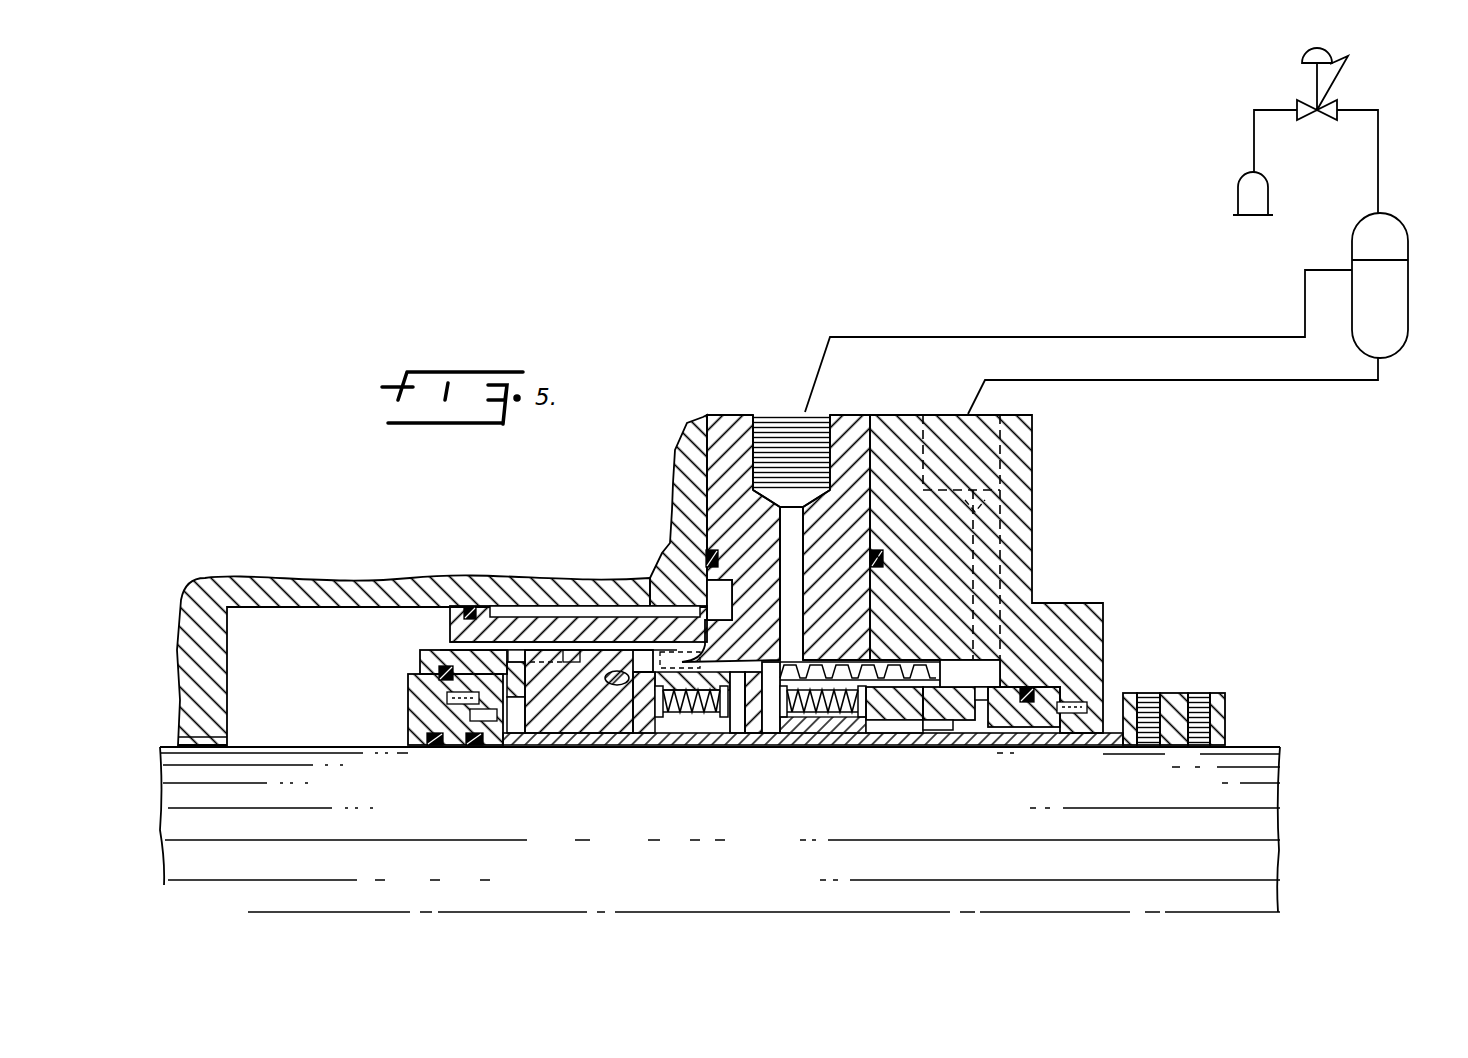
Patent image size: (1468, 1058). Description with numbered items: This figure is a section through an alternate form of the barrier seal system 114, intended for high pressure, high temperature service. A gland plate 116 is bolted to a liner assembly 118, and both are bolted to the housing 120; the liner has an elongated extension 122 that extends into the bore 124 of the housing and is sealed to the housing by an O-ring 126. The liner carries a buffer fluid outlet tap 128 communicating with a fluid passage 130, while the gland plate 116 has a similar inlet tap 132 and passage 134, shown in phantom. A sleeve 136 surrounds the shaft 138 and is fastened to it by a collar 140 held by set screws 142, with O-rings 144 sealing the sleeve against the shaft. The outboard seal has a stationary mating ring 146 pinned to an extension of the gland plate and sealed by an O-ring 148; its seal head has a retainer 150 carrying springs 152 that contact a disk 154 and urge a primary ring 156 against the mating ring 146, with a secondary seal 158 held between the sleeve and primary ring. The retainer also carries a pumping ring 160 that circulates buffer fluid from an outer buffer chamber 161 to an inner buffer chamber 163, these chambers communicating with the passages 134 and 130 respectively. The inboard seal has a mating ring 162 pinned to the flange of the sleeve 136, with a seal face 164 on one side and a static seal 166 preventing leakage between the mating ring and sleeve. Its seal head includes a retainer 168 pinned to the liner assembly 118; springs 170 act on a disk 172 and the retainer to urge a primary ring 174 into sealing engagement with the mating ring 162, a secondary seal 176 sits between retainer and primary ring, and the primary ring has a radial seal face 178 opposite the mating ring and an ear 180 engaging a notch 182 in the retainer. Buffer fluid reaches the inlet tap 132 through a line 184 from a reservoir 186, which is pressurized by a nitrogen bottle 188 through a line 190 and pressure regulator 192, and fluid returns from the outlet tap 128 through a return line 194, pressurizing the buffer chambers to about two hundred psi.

The barrier seal system 114 is at (1043, 533).
The gland plate 116 is at (905, 417).
The liner assembly 118 is at (733, 414).
The housing 120 is at (697, 437).
The elongated extension 122 is at (625, 632).
The bore 124 is at (278, 610).
The O-ring 126 is at (470, 608).
The buffer fluid outlet tap 128 is at (818, 420).
The fluid passage 130 is at (790, 522).
The inlet tap 132 is at (1003, 416).
The passage 134 is at (995, 583).
The sleeve 136 is at (1148, 748).
The shaft 138 is at (1286, 786).
The collar 140 is at (1227, 713).
The set screws 142 is at (1203, 693).
The O-rings 144 is at (447, 746).
The stationary mating ring 146 is at (1048, 740).
The O-ring 148 is at (1030, 690).
The retainer 150 is at (785, 745).
The springs 152 is at (808, 735).
The disk 154 is at (843, 745).
The primary ring 156 is at (972, 740).
The secondary seal 158 is at (872, 735).
The pumping ring 160 is at (907, 745).
The outer buffer chamber 161 is at (950, 742).
The mating ring 162 is at (480, 748).
The inner buffer chamber 163 is at (748, 735).
The seal face 164 is at (517, 660).
The static seal 166 is at (437, 668).
The retainer 168 is at (720, 745).
The springs 170 is at (690, 735).
The disk 172 is at (665, 740).
The primary ring 174 is at (563, 740).
The secondary seal 176 is at (615, 740).
The radial seal face 178 is at (465, 668).
The ear 180 is at (548, 653).
The notch 182 is at (522, 662).
The line 184 is at (1212, 382).
The reservoir 186 is at (1390, 345).
The nitrogen bottle 188 is at (1238, 195).
The line 190 is at (1254, 142).
The pressure regulator 192 is at (1308, 120).
The return line 194 is at (1166, 336).